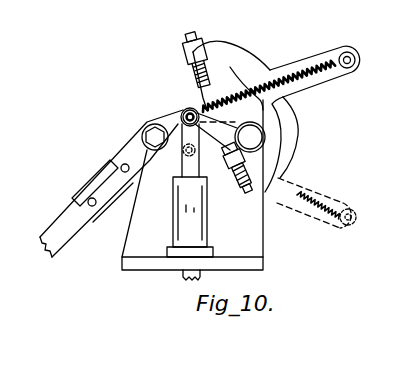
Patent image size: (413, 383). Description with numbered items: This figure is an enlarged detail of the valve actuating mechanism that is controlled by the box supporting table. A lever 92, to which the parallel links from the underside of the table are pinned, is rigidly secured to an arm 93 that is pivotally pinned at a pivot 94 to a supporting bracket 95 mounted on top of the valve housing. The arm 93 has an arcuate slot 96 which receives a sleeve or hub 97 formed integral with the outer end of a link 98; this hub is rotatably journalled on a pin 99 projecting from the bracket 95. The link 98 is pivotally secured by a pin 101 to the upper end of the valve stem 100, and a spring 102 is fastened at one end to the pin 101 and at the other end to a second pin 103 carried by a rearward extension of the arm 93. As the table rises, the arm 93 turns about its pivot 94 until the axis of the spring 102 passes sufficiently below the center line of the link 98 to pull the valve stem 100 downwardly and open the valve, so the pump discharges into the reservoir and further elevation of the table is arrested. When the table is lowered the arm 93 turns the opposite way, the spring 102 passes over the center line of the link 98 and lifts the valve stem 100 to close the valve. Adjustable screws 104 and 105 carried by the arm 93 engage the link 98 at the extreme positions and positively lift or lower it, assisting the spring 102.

The lever 92 is at (58, 216).
The arm 93 is at (113, 158).
The pivot 94 is at (143, 127).
The supporting bracket 95 is at (128, 235).
The arcuate slot 96 is at (247, 73).
The sleeve or hub 97 is at (267, 118).
The link 98 is at (184, 114).
The pin 99 is at (270, 150).
The valve stem 100 is at (180, 171).
The pin 101 is at (191, 104).
The spring 102 is at (303, 67).
The second pin 103 is at (348, 51).
The adjustable screw 104 is at (182, 76).
The adjustable screw 105 is at (230, 153).